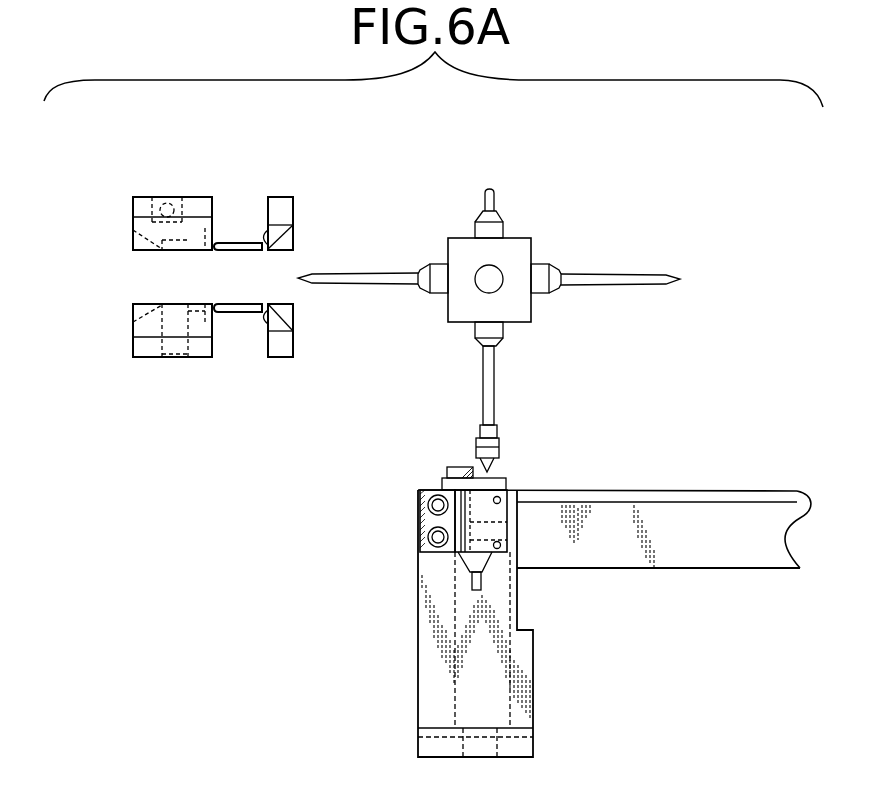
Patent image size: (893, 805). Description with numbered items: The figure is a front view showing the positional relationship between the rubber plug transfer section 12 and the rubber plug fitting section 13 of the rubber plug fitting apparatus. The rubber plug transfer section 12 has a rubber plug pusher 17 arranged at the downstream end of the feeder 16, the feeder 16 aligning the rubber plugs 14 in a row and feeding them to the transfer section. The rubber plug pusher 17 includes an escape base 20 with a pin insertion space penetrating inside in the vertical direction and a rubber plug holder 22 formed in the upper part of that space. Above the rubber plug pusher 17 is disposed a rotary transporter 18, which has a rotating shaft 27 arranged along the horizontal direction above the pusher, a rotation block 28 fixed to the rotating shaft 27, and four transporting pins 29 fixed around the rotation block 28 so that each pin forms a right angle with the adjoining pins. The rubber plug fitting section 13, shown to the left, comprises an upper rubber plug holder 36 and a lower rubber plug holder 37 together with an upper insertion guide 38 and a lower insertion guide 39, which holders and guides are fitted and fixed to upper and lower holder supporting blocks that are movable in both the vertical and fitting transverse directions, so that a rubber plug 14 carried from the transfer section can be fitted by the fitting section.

The rubber plug transfer section 12 is at (532, 583).
The rubber plug fitting section 13 is at (217, 179).
The rubber plug 14 is at (498, 445).
The feeder 16 is at (648, 491).
The rubber plug pusher 17 is at (413, 593).
The rotary transporter 18 is at (509, 306).
The escape base 20 is at (467, 662).
The rubber plug holder 22 is at (468, 501).
The rotating shaft 27 is at (505, 290).
The rotation block 28 is at (457, 310).
The transporting pin 29 is at (488, 202).
The upper rubber plug holder 36 is at (141, 195).
The lower rubber plug holder 37 is at (148, 362).
The upper insertion guide 38 is at (285, 195).
The lower insertion guide 39 is at (277, 362).